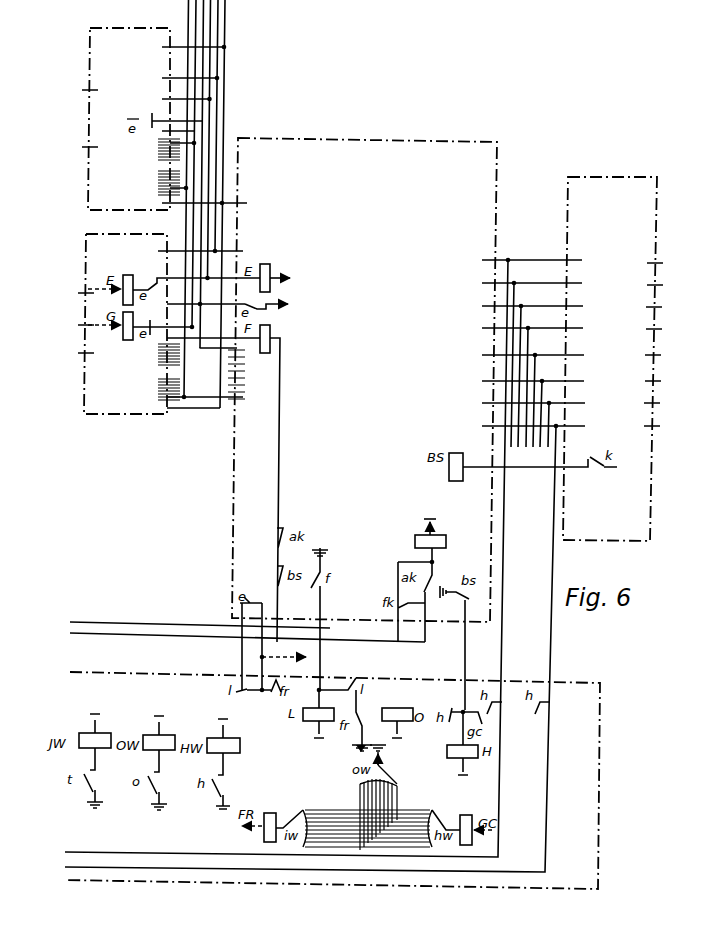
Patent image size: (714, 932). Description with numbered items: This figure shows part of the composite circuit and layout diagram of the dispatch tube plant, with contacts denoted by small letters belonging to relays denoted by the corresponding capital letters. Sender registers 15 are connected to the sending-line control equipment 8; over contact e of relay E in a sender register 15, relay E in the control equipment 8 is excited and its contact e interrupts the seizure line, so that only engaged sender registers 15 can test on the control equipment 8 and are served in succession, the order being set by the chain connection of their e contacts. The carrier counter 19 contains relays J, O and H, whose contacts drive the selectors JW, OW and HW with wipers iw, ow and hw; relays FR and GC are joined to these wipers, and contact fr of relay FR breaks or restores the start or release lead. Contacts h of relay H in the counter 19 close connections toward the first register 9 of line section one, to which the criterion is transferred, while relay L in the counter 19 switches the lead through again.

The sending-line control equipment 8 is at (364, 380).
The first register 9 is at (613, 359).
The sender registers 15 is at (124, 221).
The carrier counter 19 is at (332, 780).